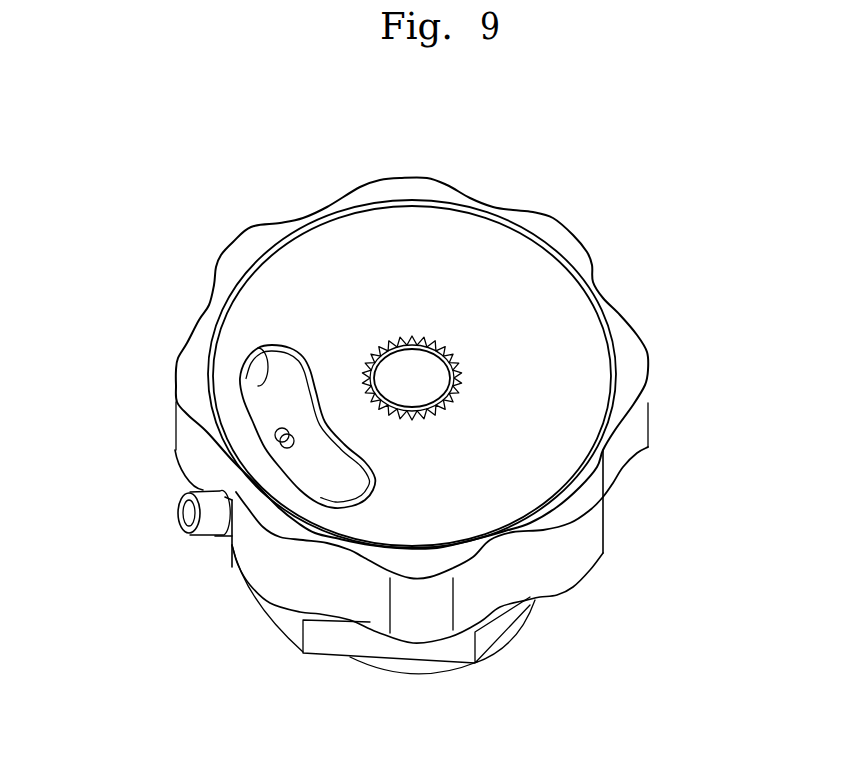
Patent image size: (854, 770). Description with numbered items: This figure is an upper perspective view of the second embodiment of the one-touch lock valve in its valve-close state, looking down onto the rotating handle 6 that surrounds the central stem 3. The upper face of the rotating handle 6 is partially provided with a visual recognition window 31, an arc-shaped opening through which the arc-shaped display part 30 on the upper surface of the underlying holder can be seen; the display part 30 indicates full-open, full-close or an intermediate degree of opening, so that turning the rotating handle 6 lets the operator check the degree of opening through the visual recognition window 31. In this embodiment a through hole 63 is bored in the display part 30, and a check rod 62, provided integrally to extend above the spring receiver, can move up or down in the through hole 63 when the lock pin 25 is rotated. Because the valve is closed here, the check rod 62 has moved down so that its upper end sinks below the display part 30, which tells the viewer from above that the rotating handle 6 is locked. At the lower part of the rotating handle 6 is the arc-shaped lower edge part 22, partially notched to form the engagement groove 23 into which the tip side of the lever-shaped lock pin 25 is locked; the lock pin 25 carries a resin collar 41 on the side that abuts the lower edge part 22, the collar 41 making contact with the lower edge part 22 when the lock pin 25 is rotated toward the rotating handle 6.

The stem 3 is at (412, 365).
The rotating handle 6 is at (623, 347).
The lower edge part 22 is at (563, 593).
The engagement groove 23 is at (188, 500).
The lock pin 25 is at (187, 517).
The display part 30 is at (310, 477).
The visual recognition window 31 is at (242, 378).
The collar 41 is at (223, 538).
The check rod 62 is at (276, 436).
The through hole 63 is at (258, 385).